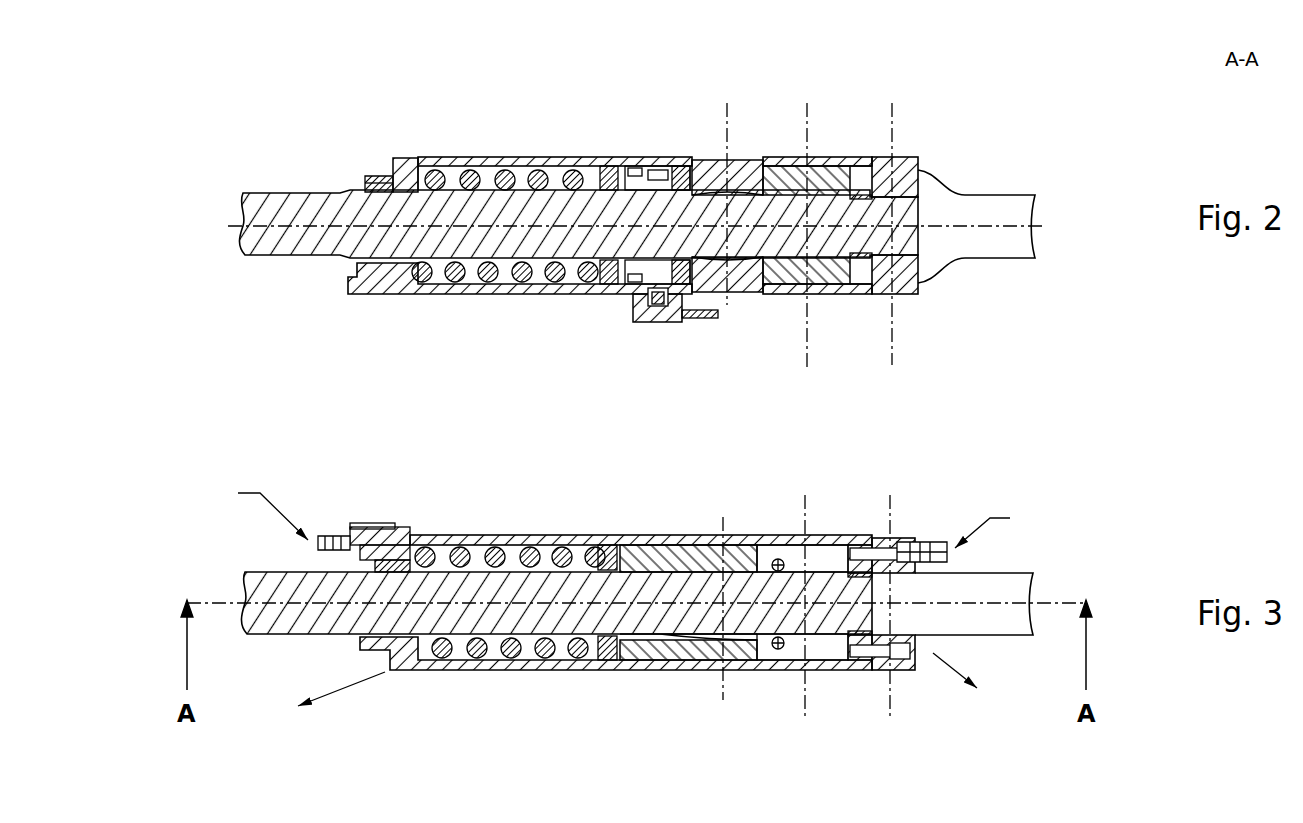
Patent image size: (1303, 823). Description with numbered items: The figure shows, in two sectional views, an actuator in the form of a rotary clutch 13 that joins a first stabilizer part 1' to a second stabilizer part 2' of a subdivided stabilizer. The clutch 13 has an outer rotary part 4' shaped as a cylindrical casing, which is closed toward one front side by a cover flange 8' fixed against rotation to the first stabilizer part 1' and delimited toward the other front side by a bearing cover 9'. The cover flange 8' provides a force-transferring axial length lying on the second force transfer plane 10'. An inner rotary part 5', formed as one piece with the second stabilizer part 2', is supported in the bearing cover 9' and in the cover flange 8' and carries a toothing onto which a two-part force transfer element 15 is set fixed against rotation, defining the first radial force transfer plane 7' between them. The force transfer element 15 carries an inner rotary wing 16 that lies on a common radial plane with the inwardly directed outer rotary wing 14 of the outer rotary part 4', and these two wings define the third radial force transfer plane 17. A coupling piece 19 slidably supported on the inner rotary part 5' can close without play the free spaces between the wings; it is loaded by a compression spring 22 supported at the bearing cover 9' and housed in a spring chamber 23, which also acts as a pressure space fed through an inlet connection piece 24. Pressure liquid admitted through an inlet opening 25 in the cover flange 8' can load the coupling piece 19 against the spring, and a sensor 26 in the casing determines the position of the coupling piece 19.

In FIG. 2, the first stabilizer part 1' is at (992, 214).
In FIG. 3, the first stabilizer part 1' is at (1027, 543).
In FIG. 2, the second stabilizer part 2' is at (545, 153).
In FIG. 3, the second stabilizer part 2' is at (502, 541).
In FIG. 2, the outer rotary part 4' is at (610, 171).
In FIG. 3, the outer rotary part 4' is at (616, 602).
In FIG. 2, the inner rotary part 5' is at (610, 153).
In FIG. 2, the first radial force transfer plane 7' is at (851, 208).
In FIG. 3, the first radial force transfer plane 7' is at (850, 639).
In FIG. 2, the cover flange 8' is at (970, 200).
In FIG. 3, the cover flange 8' is at (881, 604).
In FIG. 2, the bearing cover 9' is at (414, 120).
In FIG. 2, the second force transfer plane 10' is at (989, 208).
In FIG. 3, the second force transfer plane 10' is at (956, 639).
In FIG. 2, the rotary clutch 13 is at (752, 377).
In FIG. 3, the rotary clutch 13 is at (573, 497).
In FIG. 2, the outer rotary wing 14 is at (743, 158).
In FIG. 3, the outer rotary wing 14 is at (734, 602).
In FIG. 2, the force transfer element 15 is at (826, 165).
In FIG. 2, the inner rotary wing 16 is at (782, 273).
In FIG. 2, the third radial force transfer plane 17 is at (727, 118).
In FIG. 3, the third radial force transfer plane 17 is at (722, 700).
In FIG. 2, the coupling piece 19 is at (645, 167).
In FIG. 2, the compression spring 22 is at (460, 172).
In FIG. 3, the compression spring 22 is at (510, 557).
In FIG. 2, the spring chamber 23 is at (462, 295).
In FIG. 3, the spring chamber 23 is at (510, 648).
In FIG. 3, the inlet connection piece 24 is at (377, 530).
In FIG. 3, the inlet opening 25 is at (905, 538).
In FIG. 2, the sensor 26 is at (655, 322).